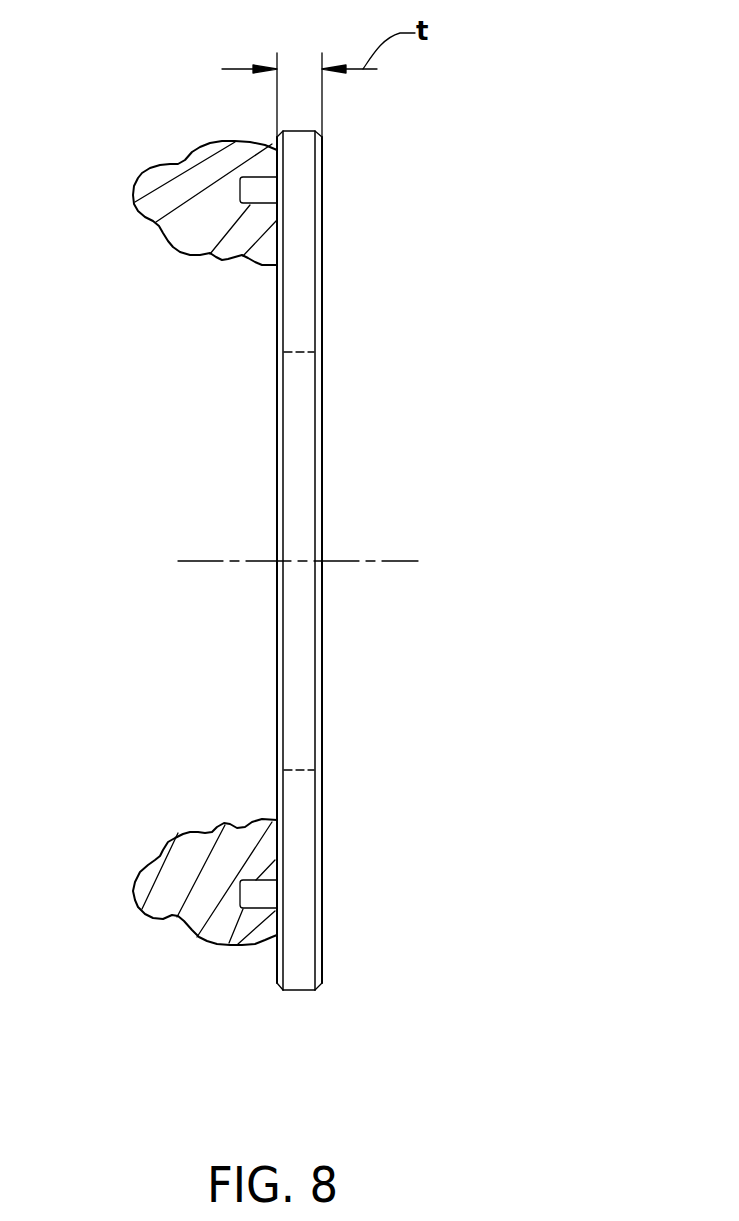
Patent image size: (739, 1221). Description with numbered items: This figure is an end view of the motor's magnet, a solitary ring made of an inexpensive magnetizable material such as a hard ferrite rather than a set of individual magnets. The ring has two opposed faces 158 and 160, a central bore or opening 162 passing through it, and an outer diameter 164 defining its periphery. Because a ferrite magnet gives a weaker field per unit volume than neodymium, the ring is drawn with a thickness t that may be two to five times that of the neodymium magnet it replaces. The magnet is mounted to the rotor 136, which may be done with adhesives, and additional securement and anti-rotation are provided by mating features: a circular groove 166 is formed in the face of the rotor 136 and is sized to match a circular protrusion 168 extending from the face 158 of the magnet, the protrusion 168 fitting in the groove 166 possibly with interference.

The rotor 136 is at (192, 155).
The circular protrusion 168 is at (222, 242).
The face 158 is at (277, 968).
The face 160 is at (334, 946).
The central bore or opening 162 is at (298, 352).
The outer diameter 164 is at (299, 990).
The circular groove 166 is at (297, 890).